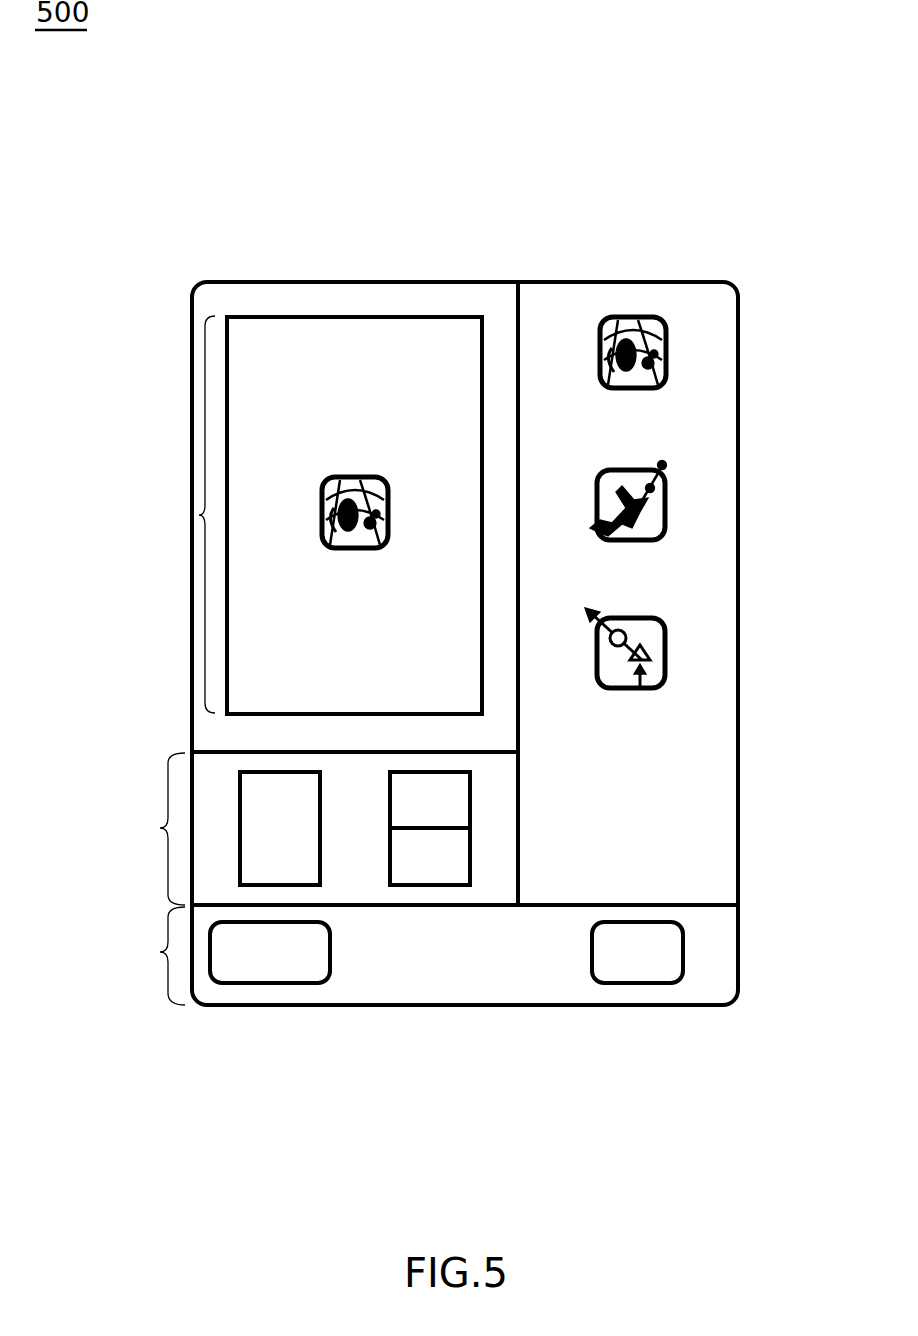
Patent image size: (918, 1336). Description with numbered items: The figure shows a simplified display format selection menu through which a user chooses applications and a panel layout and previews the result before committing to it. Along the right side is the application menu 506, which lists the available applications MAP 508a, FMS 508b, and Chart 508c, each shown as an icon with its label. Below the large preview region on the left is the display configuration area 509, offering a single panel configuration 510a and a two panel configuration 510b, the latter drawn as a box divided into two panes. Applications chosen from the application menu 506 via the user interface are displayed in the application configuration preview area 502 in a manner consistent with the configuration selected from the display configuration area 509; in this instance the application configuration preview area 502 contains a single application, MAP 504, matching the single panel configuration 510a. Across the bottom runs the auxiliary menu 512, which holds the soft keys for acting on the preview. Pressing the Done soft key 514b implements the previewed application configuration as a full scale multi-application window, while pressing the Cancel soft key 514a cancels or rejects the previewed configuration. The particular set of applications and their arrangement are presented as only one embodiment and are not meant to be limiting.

The application configuration preview area 502 is at (199, 515).
The MAP application 504 is at (322, 508).
The application menu 506 is at (710, 318).
The MAP application 508a is at (600, 355).
The FMS application 508b is at (597, 510).
The Chart application 508c is at (597, 666).
The display configuration area 509 is at (160, 828).
The single panel configuration 510a is at (267, 828).
The two panel configuration 510b is at (417, 828).
The auxiliary menu 512 is at (160, 952).
The Cancel soft key 514a is at (336, 953).
The Done soft key 514b is at (687, 953).